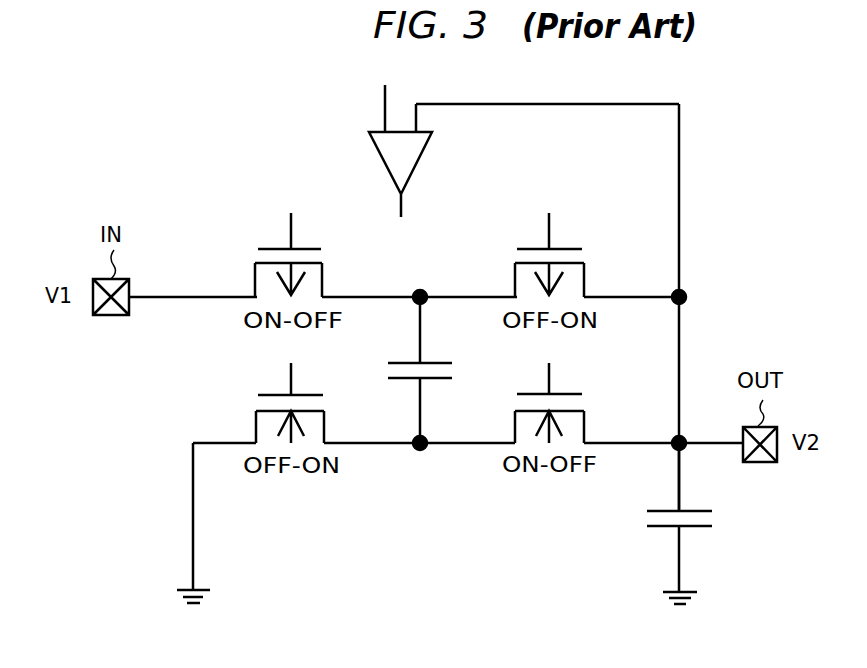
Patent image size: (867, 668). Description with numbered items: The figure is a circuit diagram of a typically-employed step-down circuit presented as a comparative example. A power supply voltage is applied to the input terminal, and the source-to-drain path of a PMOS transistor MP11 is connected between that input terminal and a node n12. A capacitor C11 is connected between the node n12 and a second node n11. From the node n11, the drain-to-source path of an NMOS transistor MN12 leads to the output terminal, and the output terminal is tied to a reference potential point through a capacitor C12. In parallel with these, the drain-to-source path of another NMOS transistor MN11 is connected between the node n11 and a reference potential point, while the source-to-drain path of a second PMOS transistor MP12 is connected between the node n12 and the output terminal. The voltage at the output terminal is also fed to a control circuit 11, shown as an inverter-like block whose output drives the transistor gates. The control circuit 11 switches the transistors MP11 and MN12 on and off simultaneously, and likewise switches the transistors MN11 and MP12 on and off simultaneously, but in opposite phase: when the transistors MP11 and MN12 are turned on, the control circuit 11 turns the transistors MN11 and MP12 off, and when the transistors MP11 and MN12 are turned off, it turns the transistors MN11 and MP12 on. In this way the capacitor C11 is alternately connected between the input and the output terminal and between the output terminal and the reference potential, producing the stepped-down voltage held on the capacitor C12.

The control circuit 11 is at (382, 158).
The PMOS transistor MP11 is at (318, 255).
The PMOS transistor MP12 is at (577, 255).
The NMOS transistor MN11 is at (318, 403).
The NMOS transistor MN12 is at (578, 403).
The capacitor C11 is at (425, 370).
The capacitor C12 is at (684, 517).
The node n11 is at (441, 434).
The node n12 is at (441, 288).